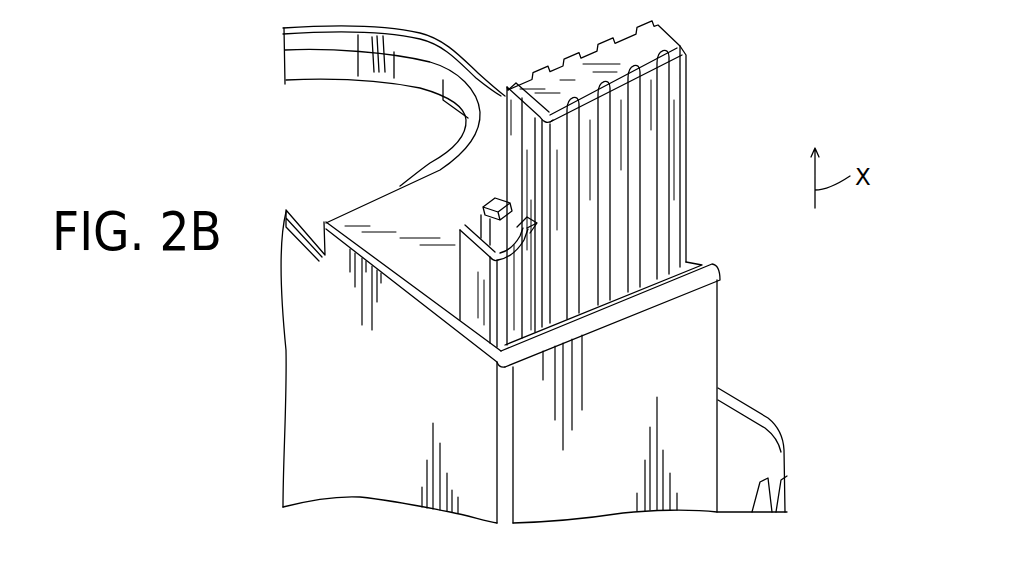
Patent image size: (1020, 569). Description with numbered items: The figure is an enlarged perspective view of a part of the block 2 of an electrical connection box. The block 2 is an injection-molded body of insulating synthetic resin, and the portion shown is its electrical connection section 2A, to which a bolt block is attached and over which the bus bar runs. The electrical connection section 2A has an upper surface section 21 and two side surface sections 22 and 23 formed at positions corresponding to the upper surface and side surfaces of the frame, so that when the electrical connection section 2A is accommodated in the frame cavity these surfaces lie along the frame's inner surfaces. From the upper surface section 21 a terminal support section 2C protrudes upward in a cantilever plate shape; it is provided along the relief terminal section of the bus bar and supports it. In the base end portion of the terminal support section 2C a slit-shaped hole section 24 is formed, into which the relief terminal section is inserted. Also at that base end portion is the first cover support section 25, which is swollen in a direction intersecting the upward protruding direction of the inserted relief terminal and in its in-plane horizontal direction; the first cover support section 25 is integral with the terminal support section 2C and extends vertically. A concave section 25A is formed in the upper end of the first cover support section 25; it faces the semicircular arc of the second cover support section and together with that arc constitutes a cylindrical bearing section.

The block 2 is at (727, 111).
The electrical connection section 2A is at (248, 83).
The terminal support section 2C is at (662, 30).
The upper surface section 21 is at (392, 212).
The side surface section 22 is at (318, 394).
The side surface section 23 is at (678, 380).
The hole section 24 is at (656, 271).
The first cover support section 25 is at (473, 279).
The concave section 25A is at (477, 228).